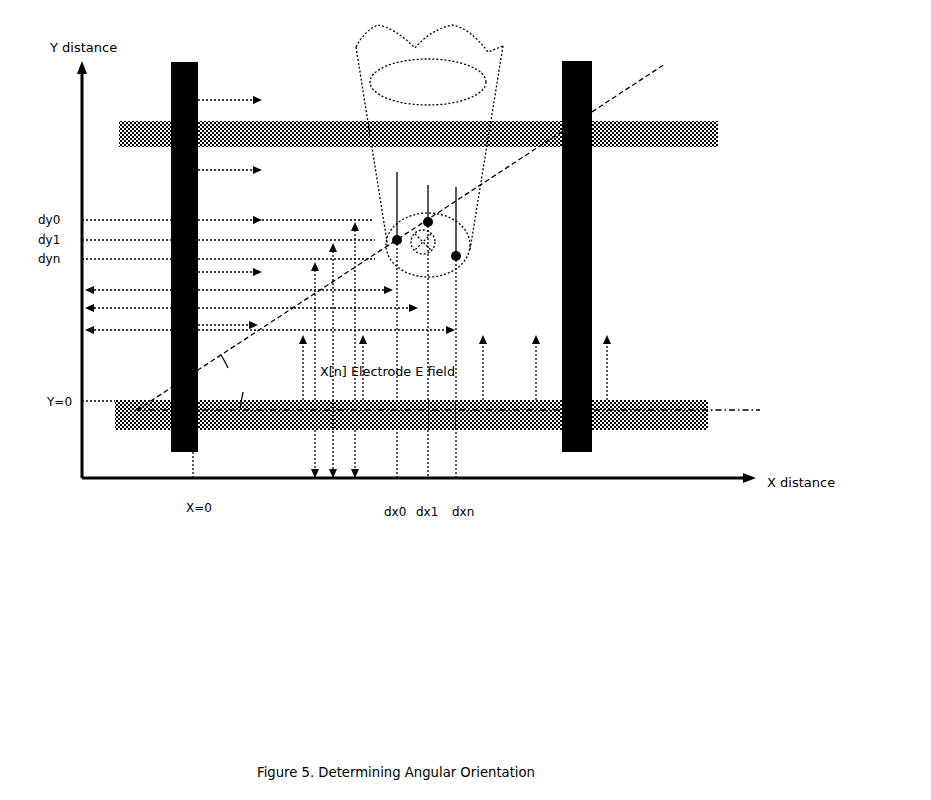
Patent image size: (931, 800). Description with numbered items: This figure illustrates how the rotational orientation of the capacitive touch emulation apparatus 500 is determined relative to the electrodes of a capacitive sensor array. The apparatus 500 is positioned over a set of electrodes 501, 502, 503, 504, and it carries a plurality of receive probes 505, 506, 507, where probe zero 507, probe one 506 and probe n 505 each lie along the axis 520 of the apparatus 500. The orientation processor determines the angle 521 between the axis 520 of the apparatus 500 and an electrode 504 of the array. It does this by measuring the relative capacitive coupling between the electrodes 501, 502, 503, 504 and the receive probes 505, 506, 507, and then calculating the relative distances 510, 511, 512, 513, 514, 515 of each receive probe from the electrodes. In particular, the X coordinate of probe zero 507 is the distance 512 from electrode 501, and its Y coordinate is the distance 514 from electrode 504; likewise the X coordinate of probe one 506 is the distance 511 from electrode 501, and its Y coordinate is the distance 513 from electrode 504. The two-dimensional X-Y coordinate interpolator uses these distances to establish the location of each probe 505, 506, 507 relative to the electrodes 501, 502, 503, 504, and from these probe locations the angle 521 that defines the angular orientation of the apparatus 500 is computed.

The capacitive touch emulation apparatus 500 is at (500, 82).
The electrode 501 is at (200, 90).
The electrode 502 is at (593, 98).
The electrode 503 is at (657, 121).
The electrode 504 is at (654, 400).
The receive probe n 505 is at (460, 254).
The receive probe 1 506 is at (428, 226).
The receive probe 0 507 is at (434, 252).
The receive probe distance 510 is at (434, 336).
The distance X1 511 is at (415, 316).
The distance X0 512 is at (397, 295).
The distance Y1 513 is at (266, 283).
The distance Y0 514 is at (340, 292).
The receive probe distance 515 is at (355, 302).
The axis of the touch emulation apparatus 520 is at (462, 258).
The angle 521 is at (252, 368).